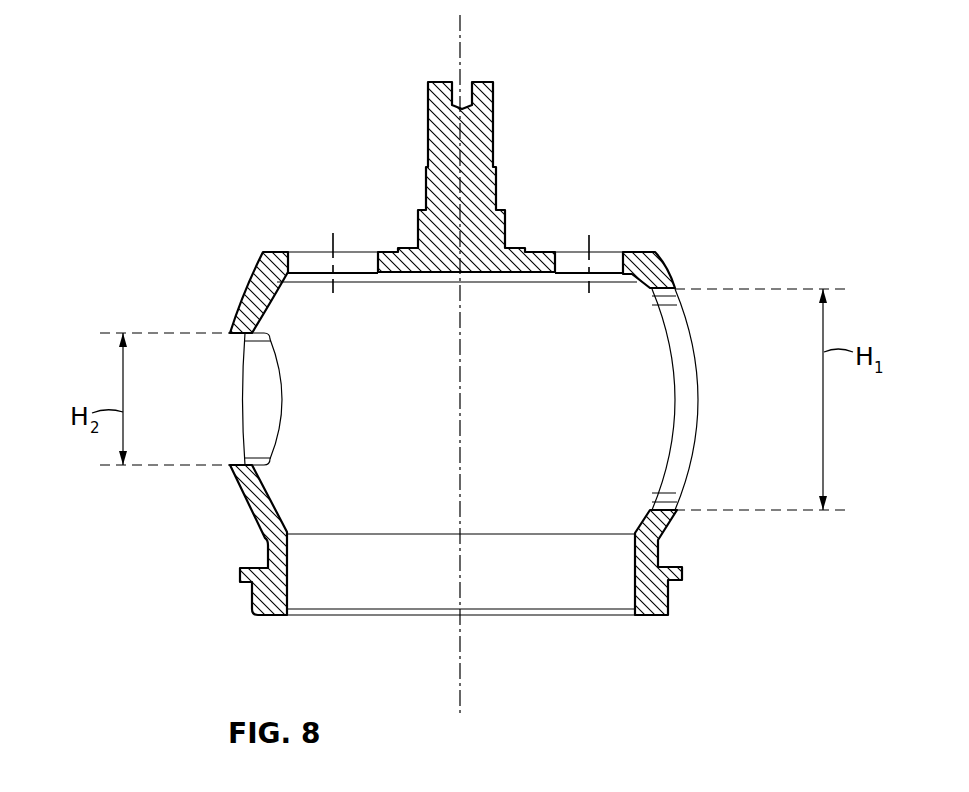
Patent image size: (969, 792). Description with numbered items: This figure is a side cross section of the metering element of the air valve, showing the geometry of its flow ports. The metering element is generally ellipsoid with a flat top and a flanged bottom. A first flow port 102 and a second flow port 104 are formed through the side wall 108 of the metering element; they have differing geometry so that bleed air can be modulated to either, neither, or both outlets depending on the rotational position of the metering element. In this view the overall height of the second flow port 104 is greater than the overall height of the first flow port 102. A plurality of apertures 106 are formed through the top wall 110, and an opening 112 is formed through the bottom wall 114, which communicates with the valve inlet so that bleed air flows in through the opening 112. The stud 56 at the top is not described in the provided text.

The mounting stud 56 is at (428, 97).
The first flow port 102 is at (243, 425).
The second flow port 104 is at (703, 395).
The apertures 106 is at (317, 258).
The side wall 108 is at (673, 279).
The top wall 110 is at (640, 251).
The opening 112 is at (345, 602).
The bottom wall 114 is at (650, 617).